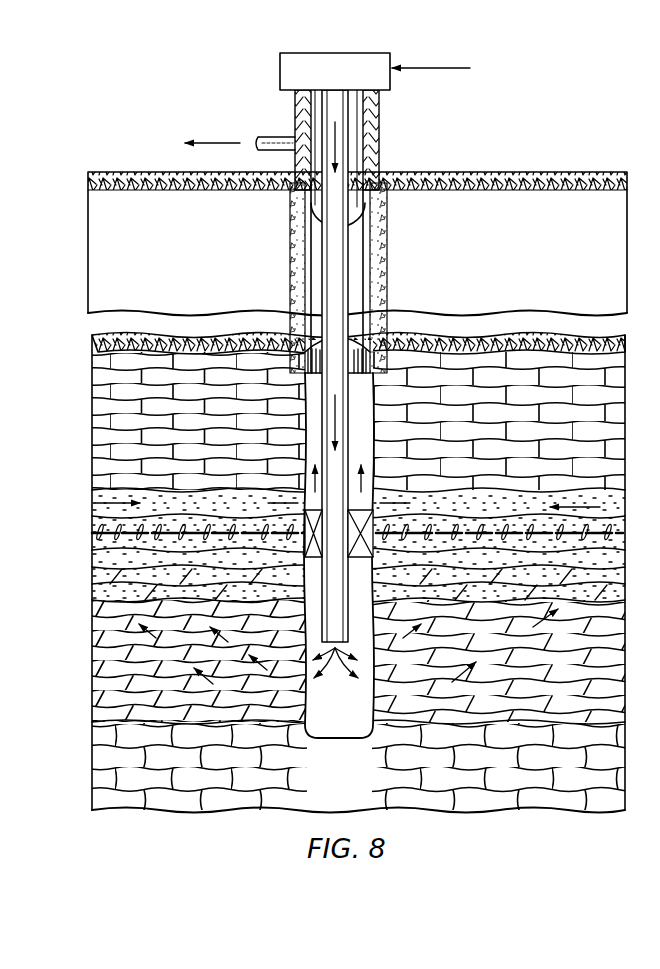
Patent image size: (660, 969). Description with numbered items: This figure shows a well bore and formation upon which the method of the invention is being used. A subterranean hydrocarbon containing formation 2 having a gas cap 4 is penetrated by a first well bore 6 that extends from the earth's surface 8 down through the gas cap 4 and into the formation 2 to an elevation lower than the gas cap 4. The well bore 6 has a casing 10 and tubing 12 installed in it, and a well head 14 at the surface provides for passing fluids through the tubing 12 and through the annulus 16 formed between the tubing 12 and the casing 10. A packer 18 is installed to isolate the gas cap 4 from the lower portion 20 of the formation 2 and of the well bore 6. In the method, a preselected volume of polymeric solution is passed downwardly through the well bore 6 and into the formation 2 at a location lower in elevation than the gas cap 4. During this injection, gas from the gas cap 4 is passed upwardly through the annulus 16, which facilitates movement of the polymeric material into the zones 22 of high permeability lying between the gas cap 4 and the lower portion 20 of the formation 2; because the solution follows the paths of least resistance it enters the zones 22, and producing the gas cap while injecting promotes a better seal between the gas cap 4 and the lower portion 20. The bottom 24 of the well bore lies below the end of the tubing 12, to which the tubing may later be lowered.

The subterranean hydrocarbon containing formation 2 is at (503, 654).
The gas cap 4 is at (512, 511).
The first well bore 6 is at (374, 680).
The earth's surface 8 is at (483, 173).
The casing 10 is at (388, 277).
The tubing 12 is at (308, 214).
The well head 14 is at (280, 71).
The annulus 16 is at (355, 209).
The packer 18 is at (365, 542).
The lower portion of the formation 20 is at (108, 703).
The zones of high permeability 22 is at (195, 526).
The bottom of the well bore 24 is at (334, 742).